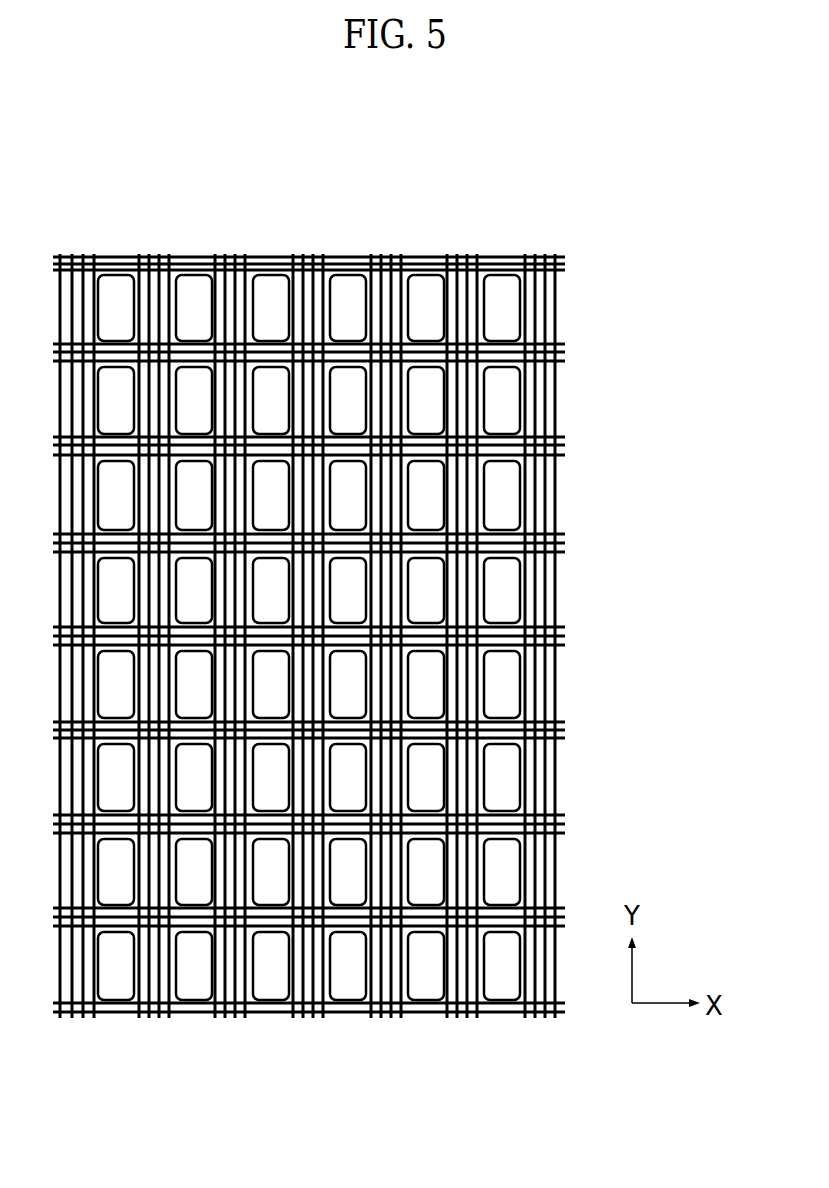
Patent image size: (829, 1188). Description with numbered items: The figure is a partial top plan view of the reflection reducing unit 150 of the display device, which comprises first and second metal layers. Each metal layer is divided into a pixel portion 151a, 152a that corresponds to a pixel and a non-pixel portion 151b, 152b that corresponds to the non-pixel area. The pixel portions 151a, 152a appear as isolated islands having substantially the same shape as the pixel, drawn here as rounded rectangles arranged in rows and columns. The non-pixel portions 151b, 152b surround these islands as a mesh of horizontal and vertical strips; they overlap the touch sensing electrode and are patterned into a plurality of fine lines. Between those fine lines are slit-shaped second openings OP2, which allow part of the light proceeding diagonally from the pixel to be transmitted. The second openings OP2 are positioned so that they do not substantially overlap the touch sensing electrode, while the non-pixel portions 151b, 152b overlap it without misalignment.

The reflection reducing unit 150 is at (615, 258).
The pixel portion 151a is at (520, 296).
The pixel portion 152a is at (309, 634).
The non-pixel portion 151b is at (535, 375).
The non-pixel portion 152b is at (356, 636).
The second openings OP2 is at (530, 664).